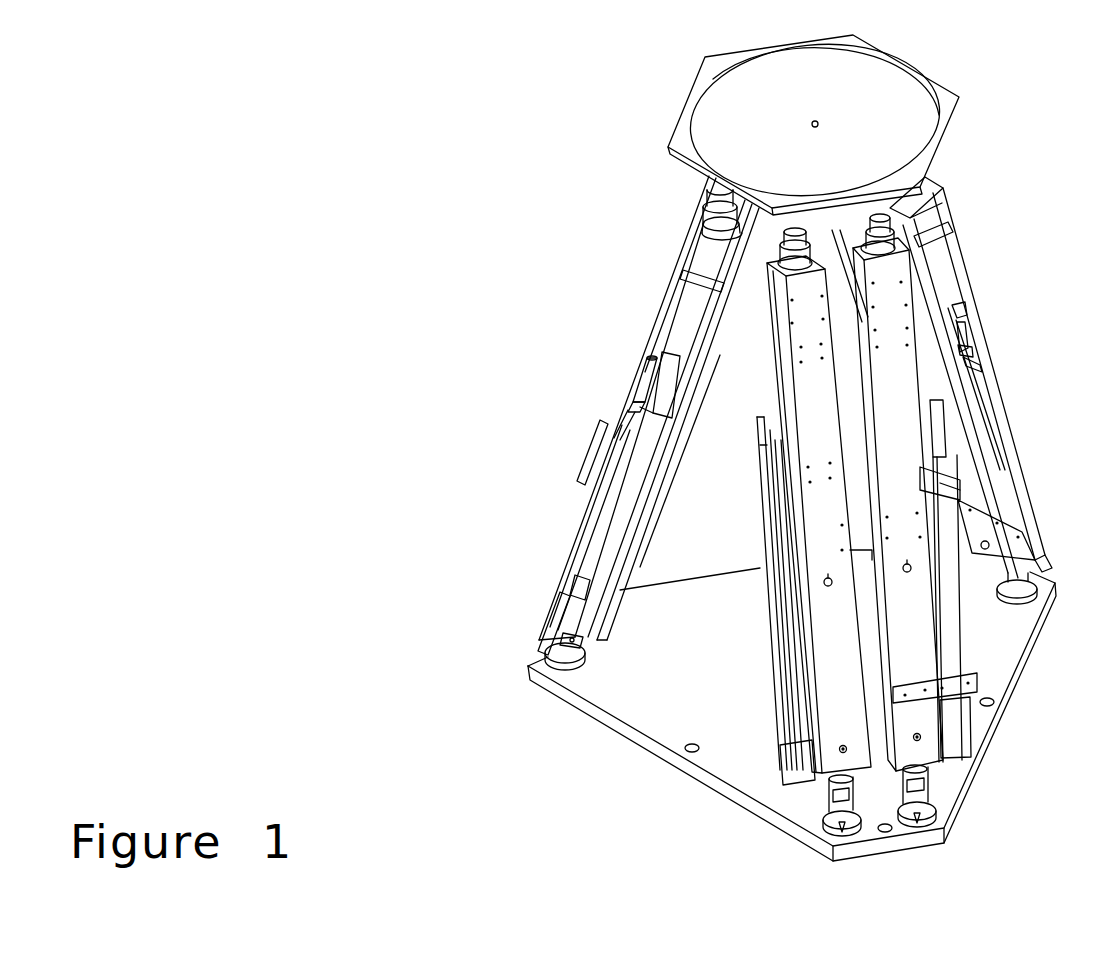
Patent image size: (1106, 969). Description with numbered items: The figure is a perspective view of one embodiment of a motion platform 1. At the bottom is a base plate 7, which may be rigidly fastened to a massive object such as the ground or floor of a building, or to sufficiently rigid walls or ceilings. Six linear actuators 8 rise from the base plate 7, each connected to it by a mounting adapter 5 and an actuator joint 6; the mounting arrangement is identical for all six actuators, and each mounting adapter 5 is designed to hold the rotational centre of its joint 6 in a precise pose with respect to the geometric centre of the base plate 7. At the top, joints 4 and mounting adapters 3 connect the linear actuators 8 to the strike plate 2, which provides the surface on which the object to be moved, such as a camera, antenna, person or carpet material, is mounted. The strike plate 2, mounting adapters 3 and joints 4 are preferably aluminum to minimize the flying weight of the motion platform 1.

The motion platform 1 is at (993, 273).
The strike plate 2 is at (738, 90).
The mounting adapter 3 is at (460, 139).
The joint 4 is at (460, 179).
The mounting adapter 5 is at (548, 662).
The actuator joint 6 is at (827, 798).
The base plate 7 is at (747, 733).
The linear actuator 8 is at (645, 358).